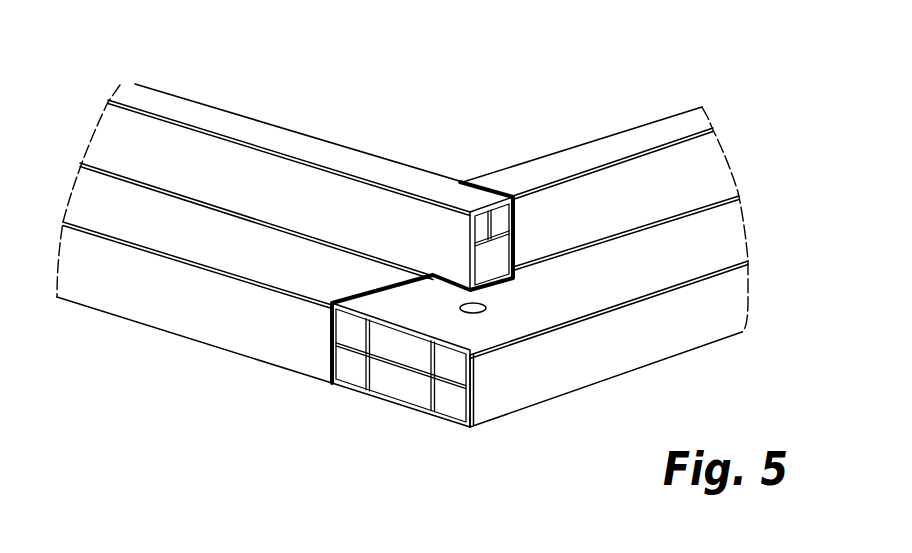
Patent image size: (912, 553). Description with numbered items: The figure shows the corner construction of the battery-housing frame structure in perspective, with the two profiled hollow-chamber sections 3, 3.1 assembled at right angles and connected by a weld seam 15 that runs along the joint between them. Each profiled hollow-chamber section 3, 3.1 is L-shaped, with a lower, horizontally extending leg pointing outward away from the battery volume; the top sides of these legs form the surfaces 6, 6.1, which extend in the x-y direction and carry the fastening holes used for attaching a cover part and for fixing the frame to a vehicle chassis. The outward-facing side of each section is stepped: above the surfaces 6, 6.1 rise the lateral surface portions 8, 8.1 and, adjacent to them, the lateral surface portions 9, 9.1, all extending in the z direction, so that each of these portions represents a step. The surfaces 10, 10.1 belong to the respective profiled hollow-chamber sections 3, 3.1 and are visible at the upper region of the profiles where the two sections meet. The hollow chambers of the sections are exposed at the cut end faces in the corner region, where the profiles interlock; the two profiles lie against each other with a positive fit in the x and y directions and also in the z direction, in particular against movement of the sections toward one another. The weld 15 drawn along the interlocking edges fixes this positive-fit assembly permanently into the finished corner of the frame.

The profiled hollow-chamber section 3 is at (600, 132).
The profiled hollow-chamber section 3.1 is at (308, 130).
The surface 6 is at (581, 298).
The surface 6.1 is at (241, 255).
The lateral surface portion 8 is at (638, 350).
The lateral surface portion 8.1 is at (233, 323).
The lateral surface portion 9 is at (619, 210).
The lateral surface portion 9.1 is at (293, 198).
The surface 10 is at (587, 157).
The surface 10.1 is at (380, 162).
The weld 15 is at (400, 283).